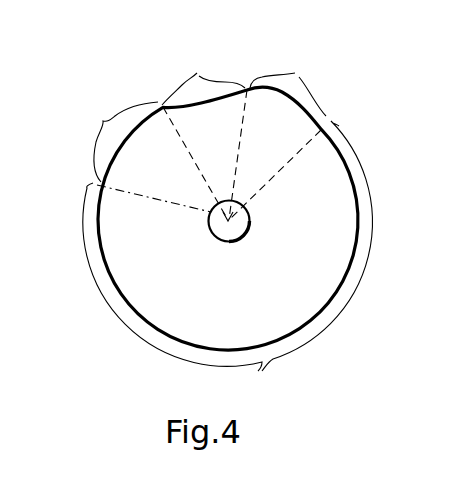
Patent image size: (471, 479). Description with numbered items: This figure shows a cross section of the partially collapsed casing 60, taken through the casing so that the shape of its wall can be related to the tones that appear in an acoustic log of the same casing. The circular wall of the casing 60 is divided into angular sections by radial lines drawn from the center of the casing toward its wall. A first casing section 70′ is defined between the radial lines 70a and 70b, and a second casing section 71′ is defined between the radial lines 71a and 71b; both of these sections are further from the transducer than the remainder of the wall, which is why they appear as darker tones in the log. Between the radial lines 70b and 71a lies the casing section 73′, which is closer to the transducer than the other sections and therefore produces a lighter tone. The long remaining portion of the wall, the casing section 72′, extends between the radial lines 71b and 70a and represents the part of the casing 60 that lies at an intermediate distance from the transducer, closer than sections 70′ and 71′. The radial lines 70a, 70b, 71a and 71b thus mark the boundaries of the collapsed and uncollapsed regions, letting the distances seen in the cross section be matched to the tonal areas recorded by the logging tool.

The casing 60 is at (138, 318).
The casing section 70′ is at (118, 138).
The casing section 71′ is at (289, 85).
The casing section 72′ is at (228, 260).
The casing section 73′ is at (203, 73).
The radial line 70a is at (158, 200).
The radial line 70b is at (189, 154).
The radial line 71a is at (243, 123).
The radial line 71b is at (271, 178).